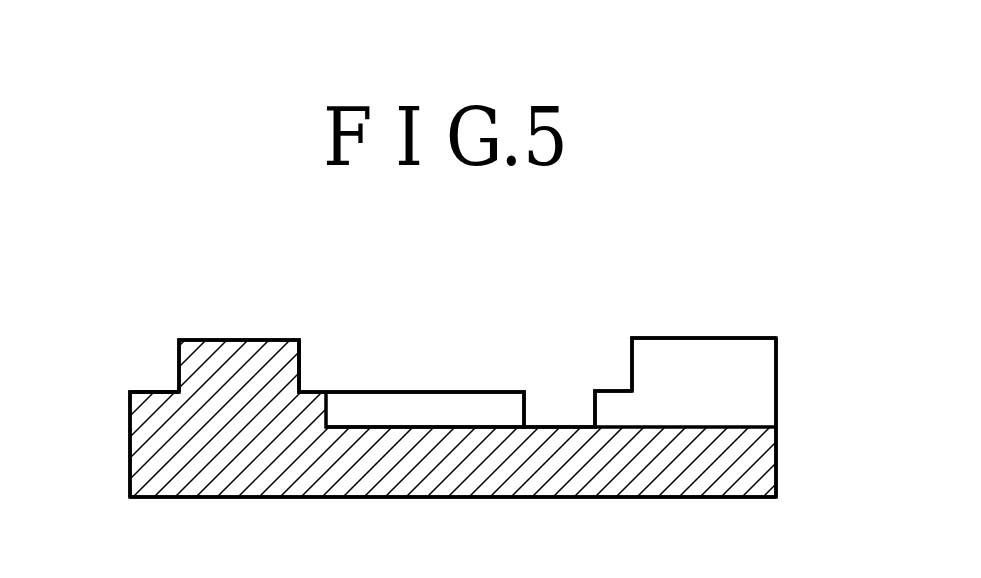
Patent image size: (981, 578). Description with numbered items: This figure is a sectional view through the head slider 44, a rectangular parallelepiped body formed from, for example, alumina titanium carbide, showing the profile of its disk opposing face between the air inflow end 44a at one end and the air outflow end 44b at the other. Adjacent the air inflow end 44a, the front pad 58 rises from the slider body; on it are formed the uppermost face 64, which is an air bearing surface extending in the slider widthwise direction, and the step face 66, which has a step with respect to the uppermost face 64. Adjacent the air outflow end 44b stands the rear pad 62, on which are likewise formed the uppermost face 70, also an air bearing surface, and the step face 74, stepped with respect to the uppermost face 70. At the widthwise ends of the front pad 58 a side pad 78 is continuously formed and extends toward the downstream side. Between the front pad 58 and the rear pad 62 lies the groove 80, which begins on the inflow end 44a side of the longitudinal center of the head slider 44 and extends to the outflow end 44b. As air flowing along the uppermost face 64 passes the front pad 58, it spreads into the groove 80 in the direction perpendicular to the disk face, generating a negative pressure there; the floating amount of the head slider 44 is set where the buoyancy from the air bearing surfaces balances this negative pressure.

The head slider 44 is at (749, 332).
The air inflow end 44a is at (130, 435).
The air outflow end 44b is at (777, 457).
The front pad 58 is at (280, 365).
The rear pad 62 is at (777, 377).
The uppermost face 64 is at (242, 340).
The step face 66 is at (155, 392).
The uppermost face 70 is at (704, 338).
The step face 74 is at (612, 387).
The side pad 78 is at (413, 392).
The groove 80 is at (482, 427).